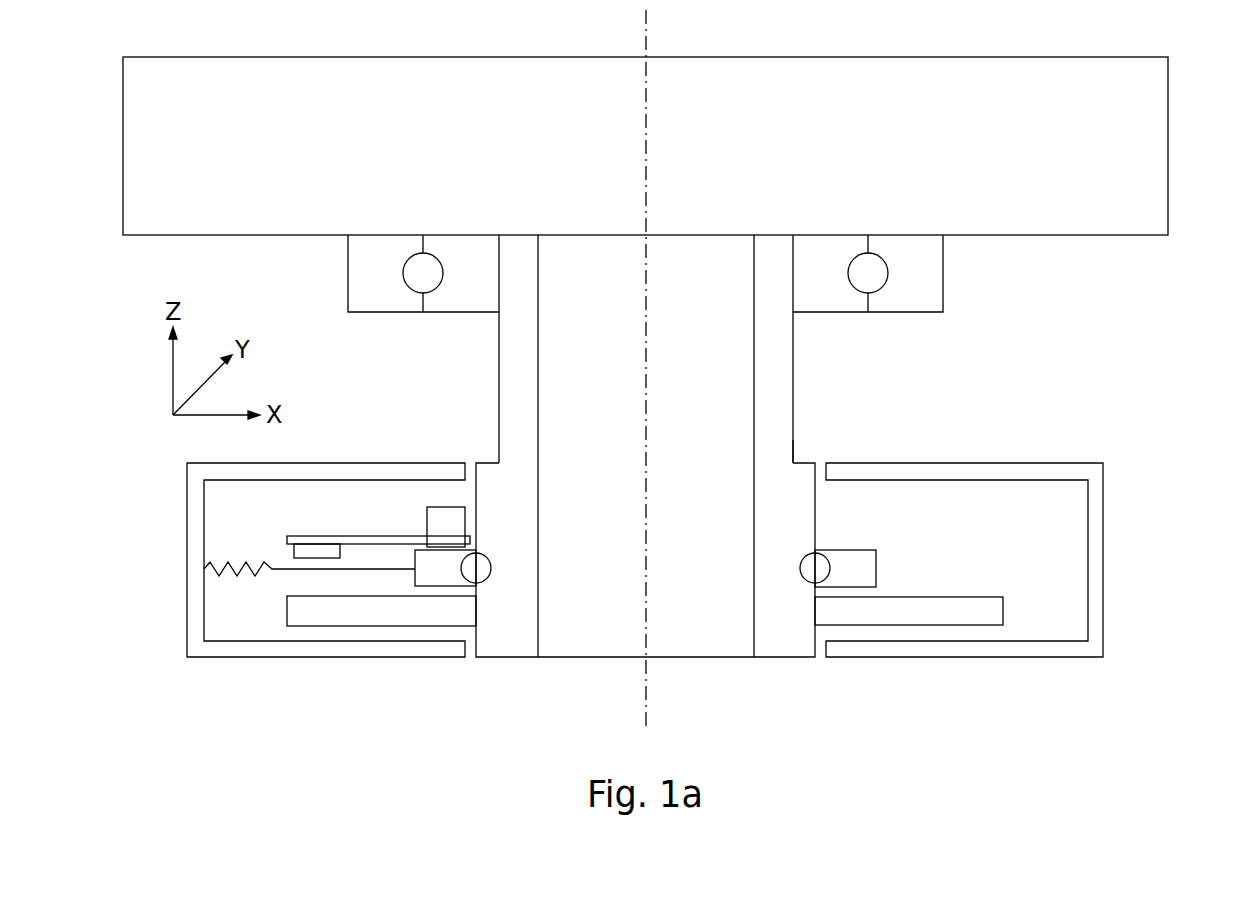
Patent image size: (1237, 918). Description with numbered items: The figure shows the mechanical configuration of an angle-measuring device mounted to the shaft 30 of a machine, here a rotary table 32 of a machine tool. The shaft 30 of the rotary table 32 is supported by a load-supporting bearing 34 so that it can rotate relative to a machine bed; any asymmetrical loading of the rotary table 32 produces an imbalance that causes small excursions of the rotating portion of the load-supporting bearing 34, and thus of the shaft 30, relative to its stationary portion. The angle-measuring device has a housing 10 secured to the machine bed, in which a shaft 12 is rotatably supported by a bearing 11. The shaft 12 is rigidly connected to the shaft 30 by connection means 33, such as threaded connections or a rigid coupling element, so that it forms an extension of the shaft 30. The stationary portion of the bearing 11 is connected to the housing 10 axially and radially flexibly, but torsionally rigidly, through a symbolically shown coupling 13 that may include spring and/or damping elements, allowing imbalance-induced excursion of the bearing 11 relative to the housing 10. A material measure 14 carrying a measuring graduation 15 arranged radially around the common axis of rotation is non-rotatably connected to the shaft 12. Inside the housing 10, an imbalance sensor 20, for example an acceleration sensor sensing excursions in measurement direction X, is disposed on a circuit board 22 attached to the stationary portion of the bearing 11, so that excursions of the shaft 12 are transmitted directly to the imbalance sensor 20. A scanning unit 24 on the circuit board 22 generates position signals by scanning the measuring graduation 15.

The housing 10 is at (1104, 548).
The bearing 11 is at (863, 550).
The shaft 12 is at (788, 650).
The coupling 13 is at (262, 578).
The material measure 14 is at (1003, 609).
The measuring graduation 15 is at (976, 596).
The imbalance sensor 20 is at (440, 506).
The circuit board 22 is at (358, 536).
The scanning unit 24 is at (294, 556).
The shaft 30 is at (793, 374).
The rotary table 32 is at (1165, 116).
The connection means 33 is at (793, 460).
The load-supporting bearing 34 is at (914, 312).